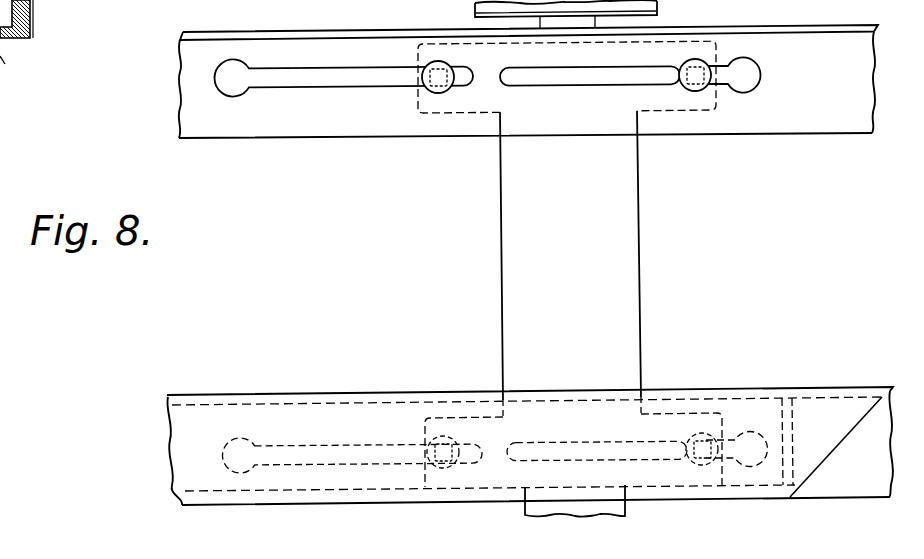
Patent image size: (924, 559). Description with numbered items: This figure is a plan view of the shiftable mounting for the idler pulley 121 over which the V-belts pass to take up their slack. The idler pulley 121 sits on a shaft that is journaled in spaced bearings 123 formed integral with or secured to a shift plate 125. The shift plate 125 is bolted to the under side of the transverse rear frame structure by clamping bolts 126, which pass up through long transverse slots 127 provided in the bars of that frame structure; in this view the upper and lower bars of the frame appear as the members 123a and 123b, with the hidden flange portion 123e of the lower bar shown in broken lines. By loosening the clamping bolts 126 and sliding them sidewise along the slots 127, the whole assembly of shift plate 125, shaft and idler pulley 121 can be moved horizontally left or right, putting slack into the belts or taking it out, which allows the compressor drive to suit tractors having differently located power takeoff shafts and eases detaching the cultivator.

The idler pulley 121 is at (657, 9).
The bearings 123 is at (79, 6).
The upper rail bar 123a is at (314, 31).
The lower rail bar 123b is at (278, 400).
The flange of lower rail 123e is at (201, 494).
The shift plate 125 is at (620, 261).
The clamping bolts 126 is at (438, 86).
The transverse slots 127 is at (321, 83).